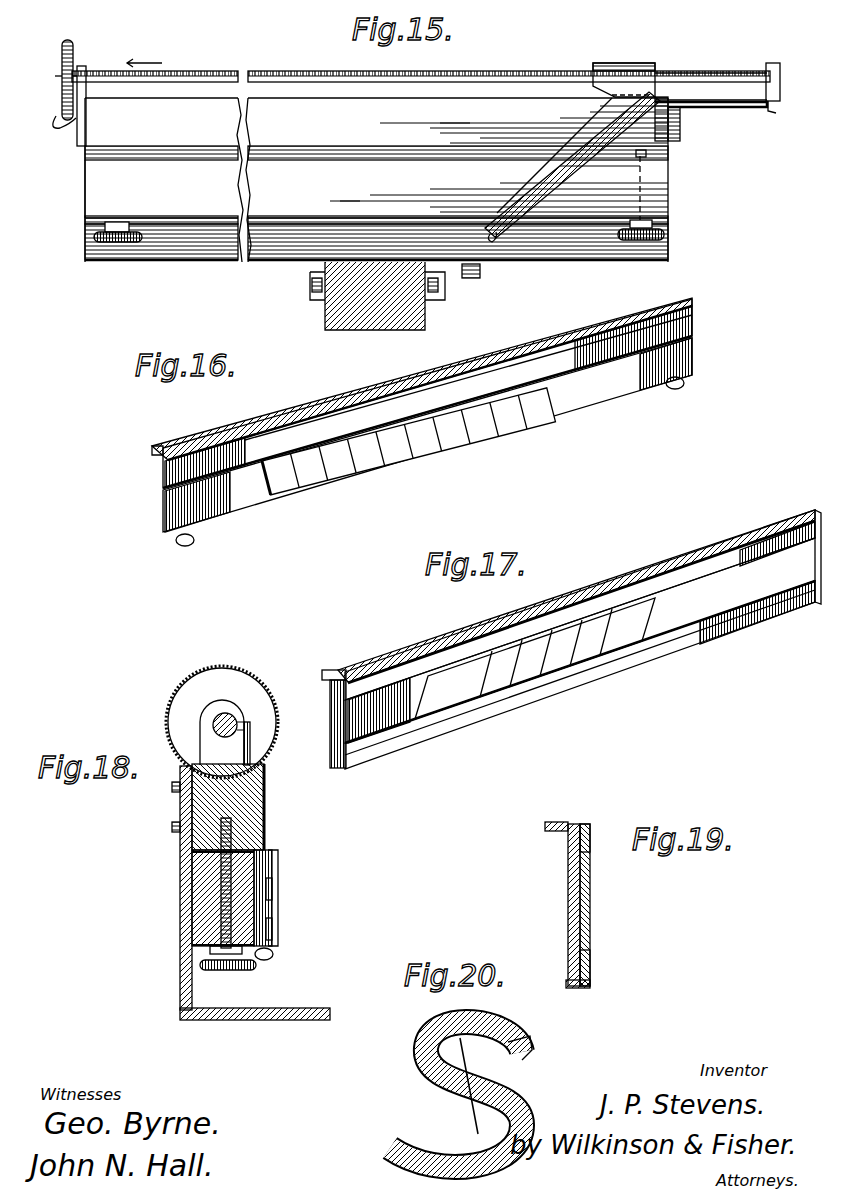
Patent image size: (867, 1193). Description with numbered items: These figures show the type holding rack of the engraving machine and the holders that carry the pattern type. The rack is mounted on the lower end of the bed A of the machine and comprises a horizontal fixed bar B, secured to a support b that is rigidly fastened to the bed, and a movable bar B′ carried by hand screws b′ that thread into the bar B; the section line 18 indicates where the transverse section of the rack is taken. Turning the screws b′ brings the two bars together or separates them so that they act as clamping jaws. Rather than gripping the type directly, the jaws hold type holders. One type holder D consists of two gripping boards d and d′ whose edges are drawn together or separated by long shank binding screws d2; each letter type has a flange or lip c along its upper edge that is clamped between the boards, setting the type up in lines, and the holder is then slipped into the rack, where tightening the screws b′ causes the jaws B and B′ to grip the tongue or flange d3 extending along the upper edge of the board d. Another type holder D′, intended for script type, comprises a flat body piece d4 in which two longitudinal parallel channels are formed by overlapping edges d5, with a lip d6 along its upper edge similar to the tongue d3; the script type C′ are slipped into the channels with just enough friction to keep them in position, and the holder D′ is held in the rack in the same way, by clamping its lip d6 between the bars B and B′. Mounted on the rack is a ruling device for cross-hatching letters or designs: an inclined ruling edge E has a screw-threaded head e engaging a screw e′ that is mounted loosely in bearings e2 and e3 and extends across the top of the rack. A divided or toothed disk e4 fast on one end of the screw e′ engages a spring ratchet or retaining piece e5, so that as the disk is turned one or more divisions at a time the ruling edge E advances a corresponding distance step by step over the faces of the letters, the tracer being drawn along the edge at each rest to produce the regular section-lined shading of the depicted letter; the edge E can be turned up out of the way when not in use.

In FIG. 15, the section line 18 is at (116, 300).
In FIG. 15, the bed A is at (415, 310).
In FIG. 15, the horizontal fixed bar B is at (376, 180).
In FIG. 18, the horizontal fixed bar B is at (255, 822).
In FIG. 15, the movable bar B′ is at (376, 180).
In FIG. 18, the movable bar B′ is at (200, 934).
In FIG. 15, the support b is at (226, 244).
In FIG. 18, the support b is at (186, 868).
In FIG. 15, the hand screws b′ is at (100, 242).
In FIG. 18, the hand screws b′ is at (222, 918).
In FIG. 15, the inclined ruling edge E is at (572, 167).
In FIG. 15, the screw-threaded head e is at (636, 66).
In FIG. 15, the screw e′ is at (236, 58).
In FIG. 18, the screw e′ is at (232, 716).
In FIG. 15, the bearing e2 is at (88, 64).
In FIG. 18, the bearing e2 is at (206, 726).
In FIG. 15, the bearing e3 is at (781, 98).
In FIG. 15, the divided or toothed disk e4 is at (62, 50).
In FIG. 18, the divided or toothed disk e4 is at (208, 682).
In FIG. 15, the spring ratchet or retaining piece e5 is at (56, 128).
In FIG. 16, the type holder D is at (402, 415).
In FIG. 18, the type holder D is at (278, 896).
In FIG. 17, the type holder for script D′ is at (579, 639).
In FIG. 19, the type holder for script D′ is at (568, 906).
In FIG. 16, the gripping board d is at (310, 422).
In FIG. 18, the gripping board d is at (268, 856).
In FIG. 16, the gripping board d′ is at (572, 410).
In FIG. 18, the gripping board d′ is at (272, 940).
In FIG. 16, the long shank binding screws d2 is at (186, 546).
In FIG. 18, the long shank binding screws d2 is at (268, 960).
In FIG. 16, the tongue or flange d3 is at (150, 460).
In FIG. 18, the tongue or flange d3 is at (246, 850).
In FIG. 17, the flat body piece d4 is at (340, 740).
In FIG. 19, the flat body piece d4 is at (568, 870).
In FIG. 17, the overlapping edges d5 is at (436, 660).
In FIG. 19, the overlapping edges d5 is at (590, 846).
In FIG. 17, the lip d6 is at (330, 668).
In FIG. 19, the lip d6 is at (562, 822).
In FIG. 16, the flange or lip c is at (276, 500).
In FIG. 18, the flange or lip c is at (272, 872).
In FIG. 17, the script type C′ is at (466, 700).
In FIG. 19, the script type C′ is at (584, 916).